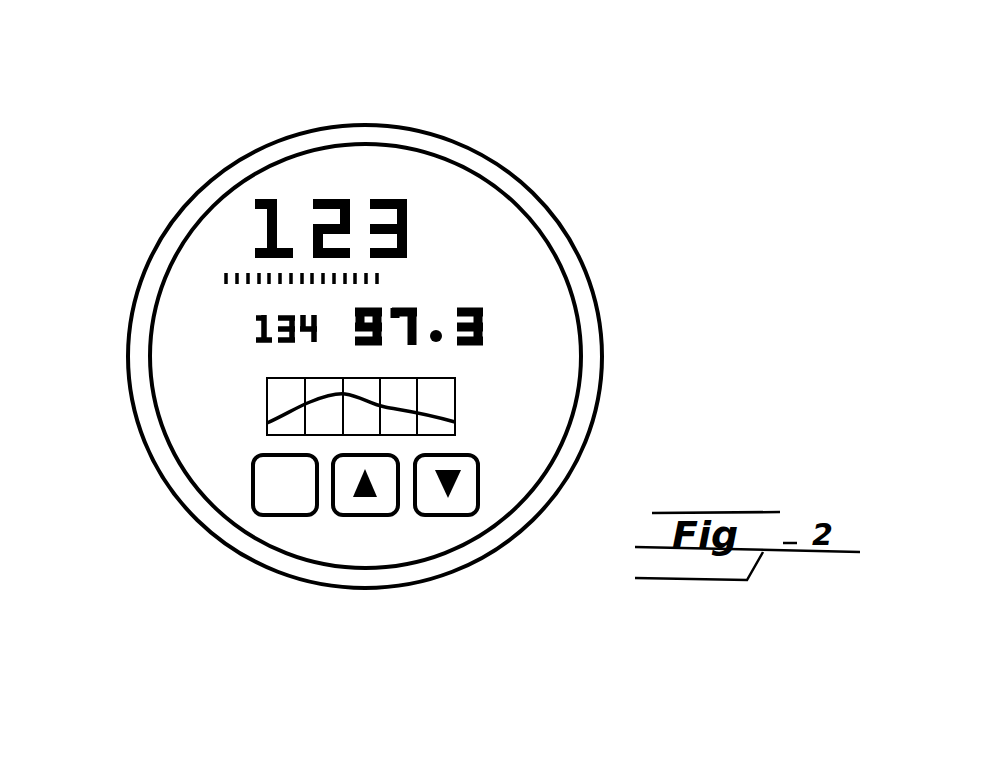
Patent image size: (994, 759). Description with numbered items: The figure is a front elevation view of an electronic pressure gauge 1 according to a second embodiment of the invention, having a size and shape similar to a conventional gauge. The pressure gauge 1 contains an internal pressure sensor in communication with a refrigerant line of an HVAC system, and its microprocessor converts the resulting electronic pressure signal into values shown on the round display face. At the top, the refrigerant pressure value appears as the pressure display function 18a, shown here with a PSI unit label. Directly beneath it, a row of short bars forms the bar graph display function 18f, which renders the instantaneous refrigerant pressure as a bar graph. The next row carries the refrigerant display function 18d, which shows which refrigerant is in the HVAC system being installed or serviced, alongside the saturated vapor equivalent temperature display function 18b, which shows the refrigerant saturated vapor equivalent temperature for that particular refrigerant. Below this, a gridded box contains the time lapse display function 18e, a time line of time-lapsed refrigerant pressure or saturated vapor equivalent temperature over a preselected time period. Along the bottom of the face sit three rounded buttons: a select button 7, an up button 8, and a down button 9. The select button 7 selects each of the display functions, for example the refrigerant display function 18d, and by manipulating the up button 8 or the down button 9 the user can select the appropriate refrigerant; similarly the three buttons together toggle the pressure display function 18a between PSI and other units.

The electronic pressure gauge 1 is at (460, 97).
The select button 7 is at (272, 517).
The up button 8 is at (357, 517).
The down button 9 is at (447, 517).
The pressure display function 18a is at (308, 167).
The saturated vapor equivalent temperature display function 18b is at (527, 330).
The refrigerant display function 18d is at (203, 327).
The time lapse display function 18e is at (267, 415).
The bar graph display function 18f is at (223, 277).